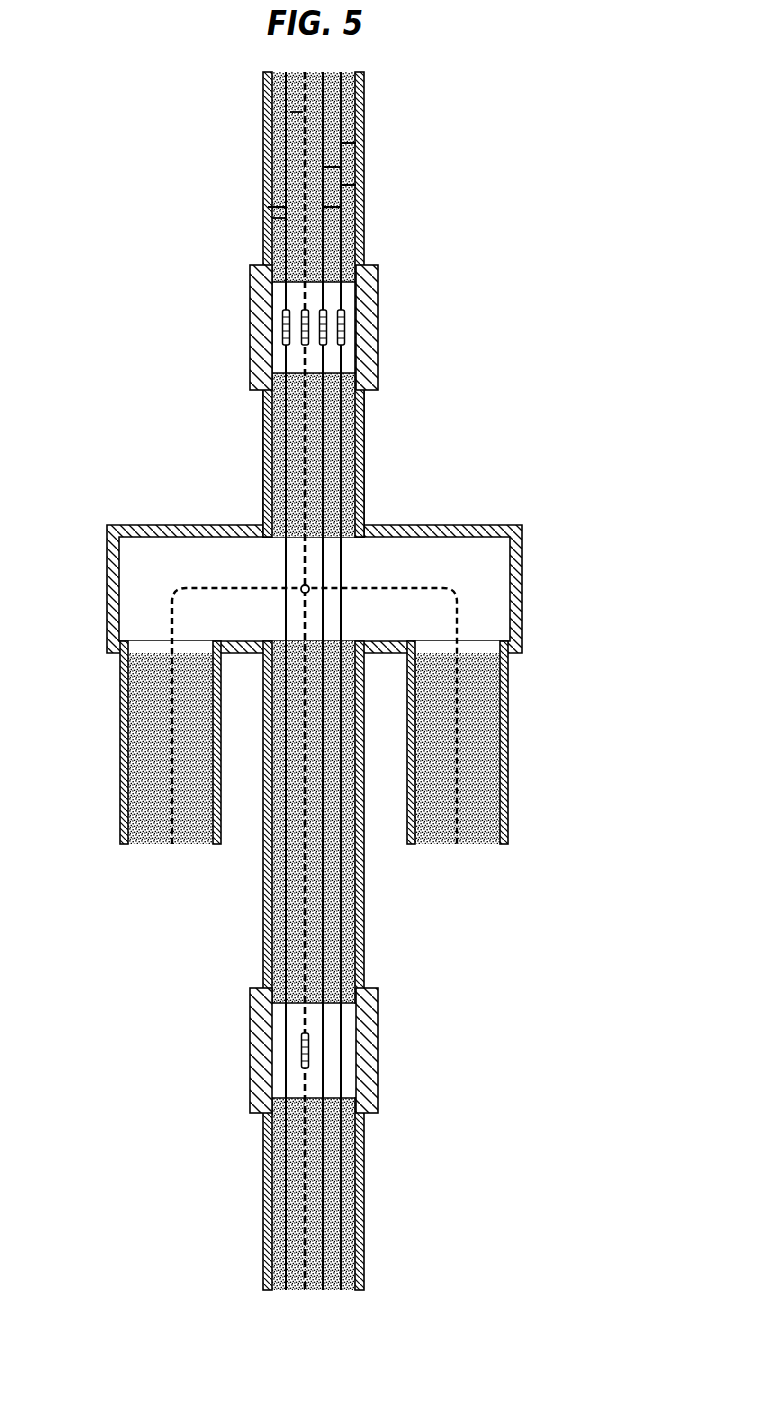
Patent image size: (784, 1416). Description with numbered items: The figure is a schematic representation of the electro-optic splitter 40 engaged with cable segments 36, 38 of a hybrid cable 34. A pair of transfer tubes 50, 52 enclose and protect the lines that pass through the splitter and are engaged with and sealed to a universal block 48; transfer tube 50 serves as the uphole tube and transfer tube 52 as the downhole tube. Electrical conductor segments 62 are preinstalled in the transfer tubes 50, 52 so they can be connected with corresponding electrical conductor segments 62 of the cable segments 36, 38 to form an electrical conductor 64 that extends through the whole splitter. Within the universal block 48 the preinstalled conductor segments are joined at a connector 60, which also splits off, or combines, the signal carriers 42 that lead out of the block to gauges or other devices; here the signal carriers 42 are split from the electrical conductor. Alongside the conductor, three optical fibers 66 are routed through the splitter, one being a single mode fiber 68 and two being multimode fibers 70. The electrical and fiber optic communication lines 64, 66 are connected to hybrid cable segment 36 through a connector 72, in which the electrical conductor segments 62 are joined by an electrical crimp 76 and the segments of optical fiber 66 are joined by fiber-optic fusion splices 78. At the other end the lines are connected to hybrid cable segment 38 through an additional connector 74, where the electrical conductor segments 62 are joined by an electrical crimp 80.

The hybrid cable 34 is at (330, 304).
The hybrid cable segment 36 is at (266, 172).
The hybrid cable segment 38 is at (364, 1220).
The electro-optic splitter 40 is at (176, 258).
The signal carriers 42 is at (170, 616).
The universal block 48 is at (522, 556).
The transfer tube 50 is at (364, 443).
The transfer tube 52 is at (364, 925).
The connector 60 is at (294, 582).
The electrical conductor segments 62 is at (303, 104).
The electrical conductor 64 is at (292, 112).
The optical fibers 66 is at (272, 207).
The single mode fiber 68 is at (274, 218).
The multimode fibers 70 is at (341, 207).
The connector 72 is at (378, 290).
The connector 74 is at (378, 1040).
The electrical crimp 76 is at (301, 334).
The fiber-optic fusion splices 78 is at (283, 322).
The electrical crimp 80 is at (301, 1052).